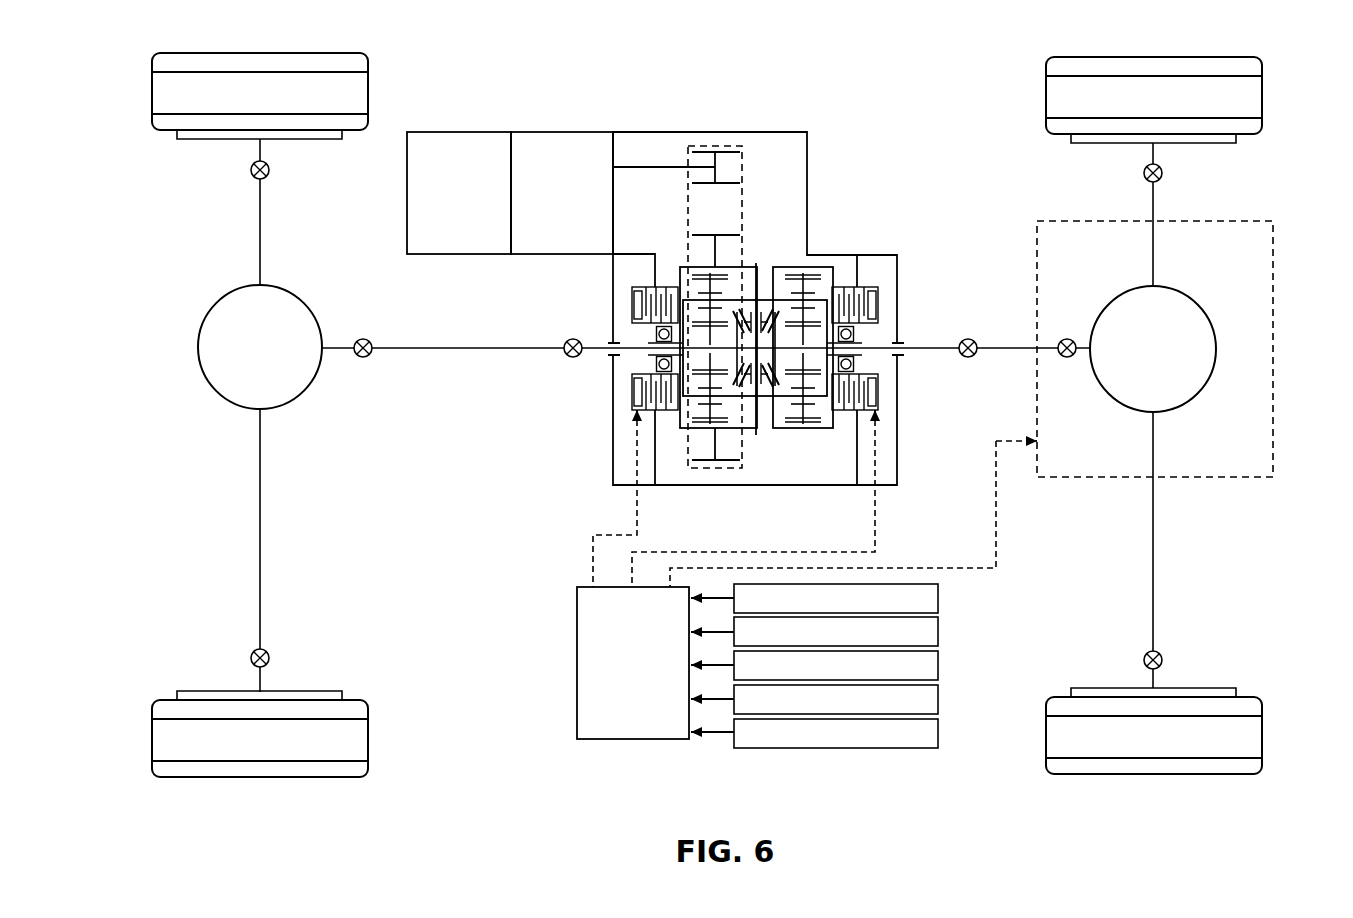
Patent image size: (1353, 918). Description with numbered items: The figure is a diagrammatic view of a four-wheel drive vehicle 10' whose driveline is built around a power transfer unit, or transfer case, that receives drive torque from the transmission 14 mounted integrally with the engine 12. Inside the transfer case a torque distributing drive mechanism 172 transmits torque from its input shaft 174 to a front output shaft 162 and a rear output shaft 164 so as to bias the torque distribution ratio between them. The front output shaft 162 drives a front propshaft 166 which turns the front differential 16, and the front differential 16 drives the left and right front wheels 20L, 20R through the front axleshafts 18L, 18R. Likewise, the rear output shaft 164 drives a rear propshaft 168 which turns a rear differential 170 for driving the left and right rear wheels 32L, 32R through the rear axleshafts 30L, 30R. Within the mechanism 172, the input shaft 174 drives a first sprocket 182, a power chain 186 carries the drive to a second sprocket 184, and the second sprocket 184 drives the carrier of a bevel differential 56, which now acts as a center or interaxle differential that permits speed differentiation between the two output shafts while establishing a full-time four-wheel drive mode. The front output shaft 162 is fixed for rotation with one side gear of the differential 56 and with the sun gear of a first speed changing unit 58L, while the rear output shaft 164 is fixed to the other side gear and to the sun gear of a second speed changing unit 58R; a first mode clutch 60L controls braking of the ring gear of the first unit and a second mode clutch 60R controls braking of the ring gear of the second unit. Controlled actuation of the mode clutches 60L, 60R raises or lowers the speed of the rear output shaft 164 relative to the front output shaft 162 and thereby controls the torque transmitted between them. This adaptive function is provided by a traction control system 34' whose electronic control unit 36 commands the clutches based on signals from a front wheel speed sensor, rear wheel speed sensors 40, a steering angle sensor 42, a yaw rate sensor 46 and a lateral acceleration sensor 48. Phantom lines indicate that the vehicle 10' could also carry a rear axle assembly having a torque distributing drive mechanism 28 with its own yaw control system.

The four-wheel drive vehicle 10' is at (464, 445).
The engine 12 is at (470, 134).
The transmission 14 is at (573, 138).
The front differential 16 is at (218, 342).
The right front axleshaft 18R is at (260, 200).
The left front axleshaft 18L is at (260, 535).
The right front wheel 20R is at (350, 89).
The left front wheel 20L is at (350, 740).
The torque distributing drive mechanism 28 is at (1278, 220).
The right rear axleshaft 30R is at (1153, 203).
The left rear axleshaft 30L is at (1153, 575).
The right rear wheel 32R is at (1245, 93).
The left rear wheel 32L is at (1250, 740).
The traction control system 34' is at (746, 602).
The electronic control unit 36 is at (602, 740).
The rear wheel speed sensor 40 is at (924, 631).
The steering angle sensor 42 is at (924, 665).
The yaw rate sensor 46 is at (924, 699).
The lateral acceleration sensor 48 is at (924, 732).
The differential 56 is at (767, 318).
The first speed changing unit 58L is at (690, 428).
The second speed changing unit 58R is at (827, 428).
The first mode clutch 60L is at (627, 390).
The second mode clutch 60R is at (878, 282).
The front output shaft 162 is at (591, 343).
The rear output shaft 164 is at (945, 346).
The front propshaft 166 is at (447, 346).
The rear propshaft 168 is at (1000, 352).
The rear differential 170 is at (1200, 360).
The torque distributing drive mechanism 172 is at (786, 254).
The input shaft 174 is at (657, 166).
The first sprocket 182 is at (749, 307).
The second sprocket 184 is at (727, 463).
The power chain 186 is at (742, 197).